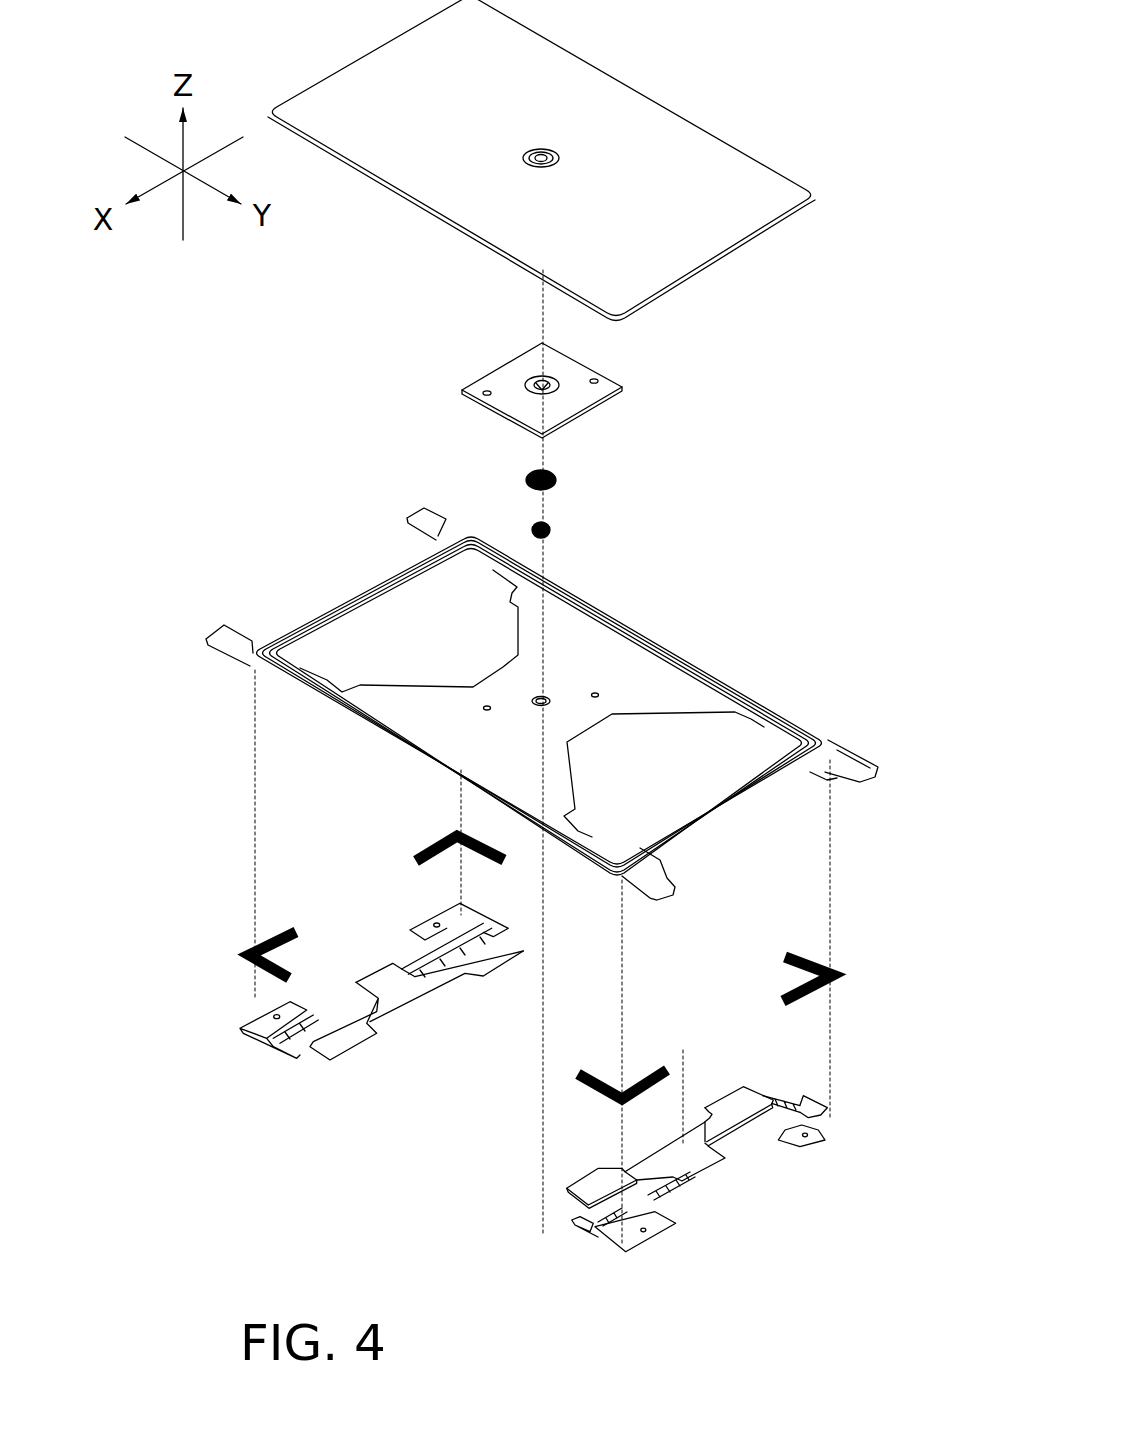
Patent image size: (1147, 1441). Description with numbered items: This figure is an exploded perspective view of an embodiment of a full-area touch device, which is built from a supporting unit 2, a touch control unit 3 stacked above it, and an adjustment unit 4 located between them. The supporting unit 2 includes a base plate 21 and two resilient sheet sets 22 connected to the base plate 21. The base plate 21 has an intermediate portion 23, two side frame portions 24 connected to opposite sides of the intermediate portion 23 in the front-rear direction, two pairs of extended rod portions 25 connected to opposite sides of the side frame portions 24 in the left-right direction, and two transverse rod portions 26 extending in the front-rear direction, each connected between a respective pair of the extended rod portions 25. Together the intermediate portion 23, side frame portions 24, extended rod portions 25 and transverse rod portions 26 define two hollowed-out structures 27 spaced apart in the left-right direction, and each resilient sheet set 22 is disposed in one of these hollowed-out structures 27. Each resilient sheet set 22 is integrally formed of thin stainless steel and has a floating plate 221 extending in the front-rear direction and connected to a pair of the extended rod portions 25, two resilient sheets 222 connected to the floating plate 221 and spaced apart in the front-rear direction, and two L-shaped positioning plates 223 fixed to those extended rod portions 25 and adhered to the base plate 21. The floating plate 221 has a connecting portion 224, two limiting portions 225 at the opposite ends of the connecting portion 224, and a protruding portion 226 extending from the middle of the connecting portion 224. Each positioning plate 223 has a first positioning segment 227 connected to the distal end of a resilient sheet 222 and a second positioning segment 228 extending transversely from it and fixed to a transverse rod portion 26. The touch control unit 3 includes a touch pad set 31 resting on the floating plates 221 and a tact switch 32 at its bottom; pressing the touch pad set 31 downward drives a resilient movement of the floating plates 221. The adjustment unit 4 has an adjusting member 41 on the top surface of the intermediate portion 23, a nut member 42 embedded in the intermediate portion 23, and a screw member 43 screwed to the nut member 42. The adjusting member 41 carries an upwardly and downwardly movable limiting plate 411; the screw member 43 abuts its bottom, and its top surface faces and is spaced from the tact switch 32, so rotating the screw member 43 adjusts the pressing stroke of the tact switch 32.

The supporting unit 2 is at (566, 671).
The touch control unit 3 is at (541, 160).
The adjustment unit 4 is at (590, 429).
The base plate 21 is at (721, 670).
The resilient sheet set 22 is at (262, 1062).
The intermediate portion 23 is at (507, 678).
The side frame portion 24 is at (586, 650).
The extended rod portion 25 is at (489, 556).
The transverse rod portion 26 is at (320, 602).
The hollowed-out structure 27 is at (395, 614).
The touch pad set 31 is at (738, 172).
The tact switch 32 is at (543, 150).
The adjusting member 41 is at (571, 379).
The nut member 42 is at (556, 480).
The screw member 43 is at (552, 530).
The limiting plate 411 is at (535, 380).
The floating plate 221 is at (573, 1168).
The resilient sheet 222 is at (747, 1138).
The positioning plate 223 is at (755, 1248).
The connecting portion 224 is at (668, 1130).
The limiting portion 225 is at (742, 1100).
The protruding portion 226 is at (707, 1160).
The first positioning segment 227 is at (607, 1238).
The second positioning segment 228 is at (648, 1265).